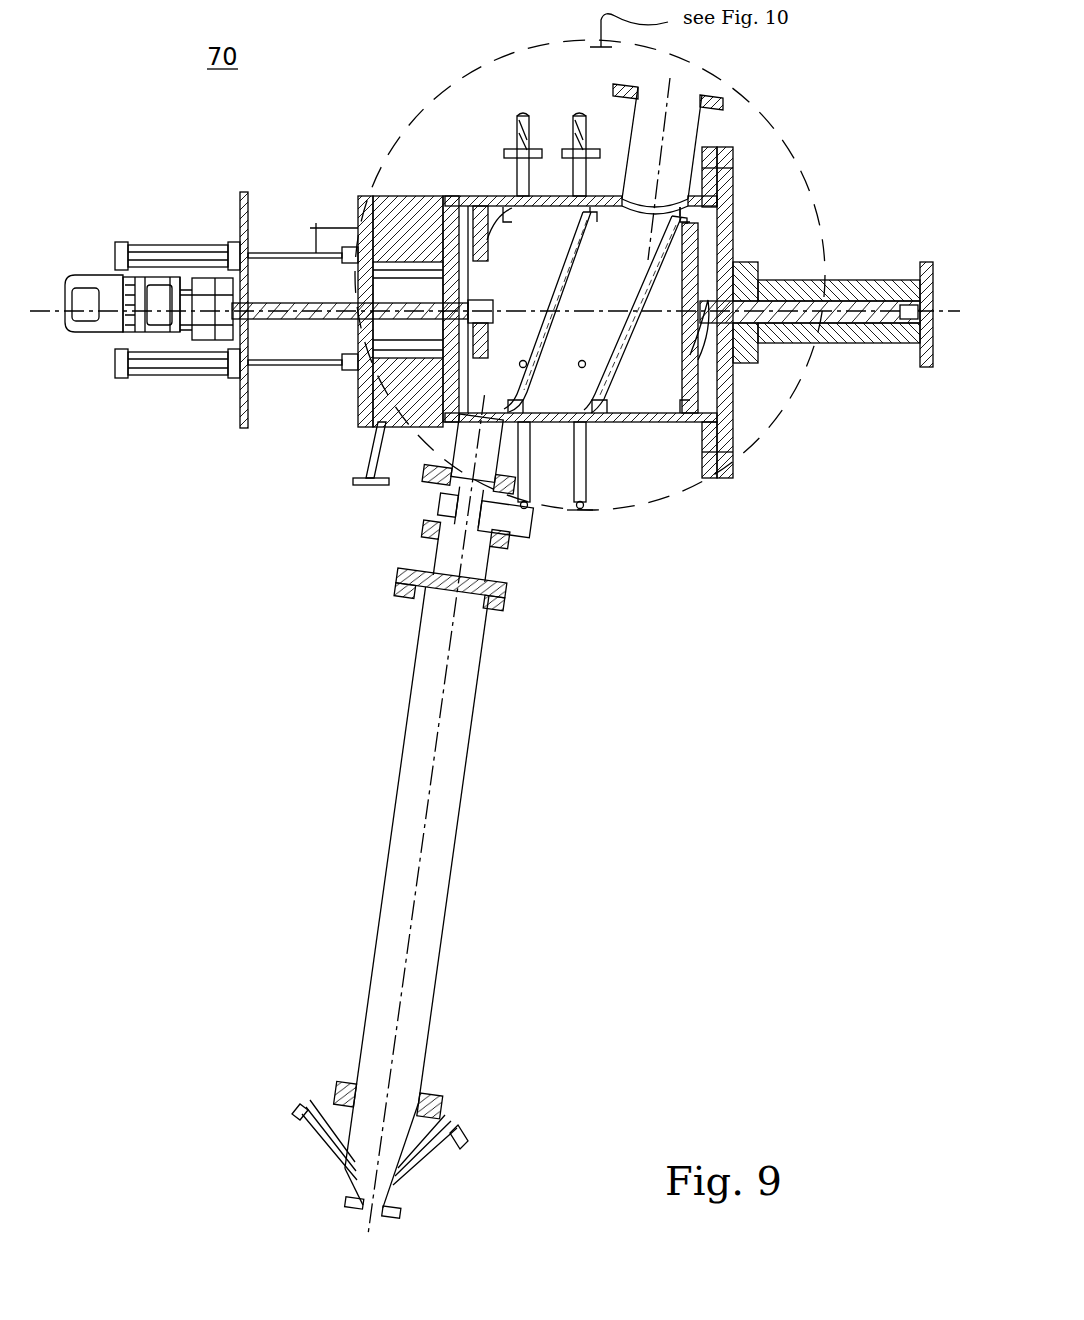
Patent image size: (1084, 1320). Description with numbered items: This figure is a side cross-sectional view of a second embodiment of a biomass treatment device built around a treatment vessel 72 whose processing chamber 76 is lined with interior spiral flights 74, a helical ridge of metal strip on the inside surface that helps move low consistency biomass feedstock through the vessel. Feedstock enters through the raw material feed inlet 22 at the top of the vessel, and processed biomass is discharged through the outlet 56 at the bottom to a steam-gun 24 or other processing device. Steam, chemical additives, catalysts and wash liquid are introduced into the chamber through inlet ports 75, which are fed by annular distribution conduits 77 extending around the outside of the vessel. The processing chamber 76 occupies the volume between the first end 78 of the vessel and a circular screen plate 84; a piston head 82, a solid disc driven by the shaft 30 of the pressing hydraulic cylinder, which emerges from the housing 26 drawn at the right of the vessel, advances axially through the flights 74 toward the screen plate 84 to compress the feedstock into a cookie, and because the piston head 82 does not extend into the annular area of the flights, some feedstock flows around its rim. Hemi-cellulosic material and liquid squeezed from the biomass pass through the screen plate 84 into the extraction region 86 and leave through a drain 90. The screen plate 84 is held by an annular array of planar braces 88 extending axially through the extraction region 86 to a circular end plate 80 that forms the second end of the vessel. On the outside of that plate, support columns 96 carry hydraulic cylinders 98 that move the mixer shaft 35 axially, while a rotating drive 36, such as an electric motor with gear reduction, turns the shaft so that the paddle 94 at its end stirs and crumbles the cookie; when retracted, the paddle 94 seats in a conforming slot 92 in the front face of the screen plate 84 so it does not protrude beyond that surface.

The raw material feed inlet 22 is at (695, 120).
The steam-gun 24 is at (450, 772).
The bearing housing 26 is at (875, 335).
The shaft of the pressing hydraulic cylinder 30 is at (835, 315).
The mixer shaft 35 is at (275, 305).
The rotating drive 36 is at (97, 322).
The outlet 56 is at (462, 440).
The treatment vessel 72 is at (648, 422).
The spiral flights 74 is at (650, 270).
The inlet ports 75 is at (582, 361).
The processing chamber 76 is at (582, 281).
The annular distribution conduits 77 is at (583, 120).
The first end of the vessel 78 is at (718, 230).
The circular end plate 80 is at (355, 245).
The piston head 82 is at (690, 345).
The screen plate 84 is at (445, 383).
The extraction region 86 is at (385, 330).
The planar braces 88 is at (400, 225).
The drain 90 is at (365, 478).
The slot 92 is at (455, 215).
The paddle 94 is at (486, 245).
The support columns 96 is at (270, 360).
The hydraulic cylinders 98 is at (175, 255).